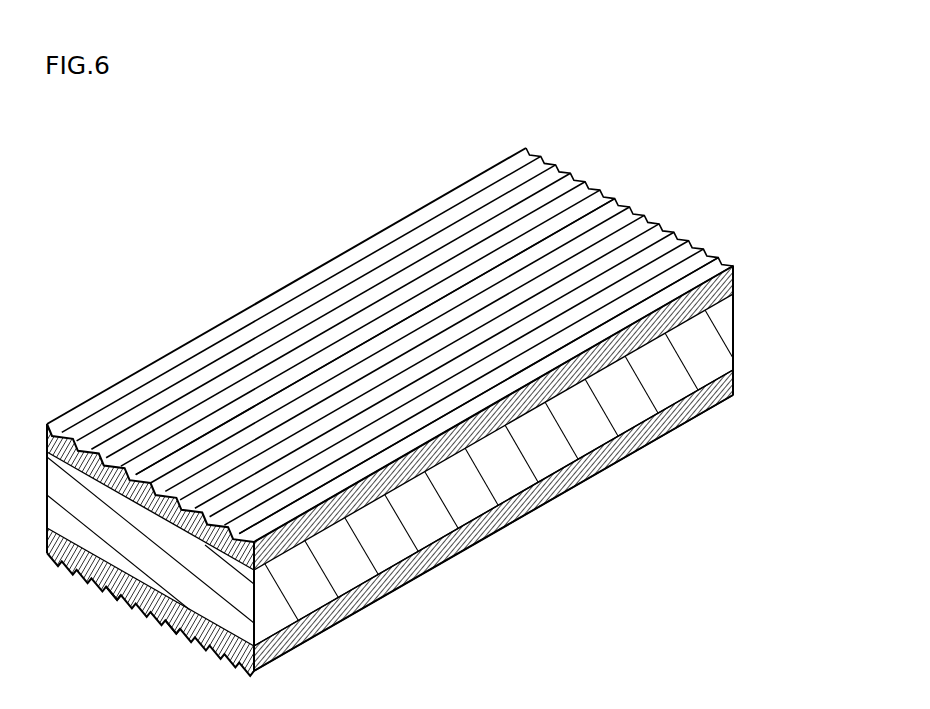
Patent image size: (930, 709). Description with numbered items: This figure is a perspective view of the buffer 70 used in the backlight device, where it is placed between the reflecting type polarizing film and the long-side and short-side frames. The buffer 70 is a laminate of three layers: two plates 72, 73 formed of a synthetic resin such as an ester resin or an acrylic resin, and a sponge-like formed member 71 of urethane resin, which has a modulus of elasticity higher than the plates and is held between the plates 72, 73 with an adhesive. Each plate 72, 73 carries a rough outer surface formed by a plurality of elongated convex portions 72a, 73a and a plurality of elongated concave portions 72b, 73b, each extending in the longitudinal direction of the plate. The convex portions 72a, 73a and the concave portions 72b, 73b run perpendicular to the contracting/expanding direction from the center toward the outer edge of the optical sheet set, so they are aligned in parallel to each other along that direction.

The buffer 70 is at (793, 292).
The formed member 71 is at (711, 343).
The plate 72 is at (726, 289).
The convex portion 72a is at (273, 343).
The concave portion 72b is at (163, 420).
The plate 73 is at (726, 386).
The convex portion 73a is at (120, 593).
The concave portion 73b is at (173, 620).